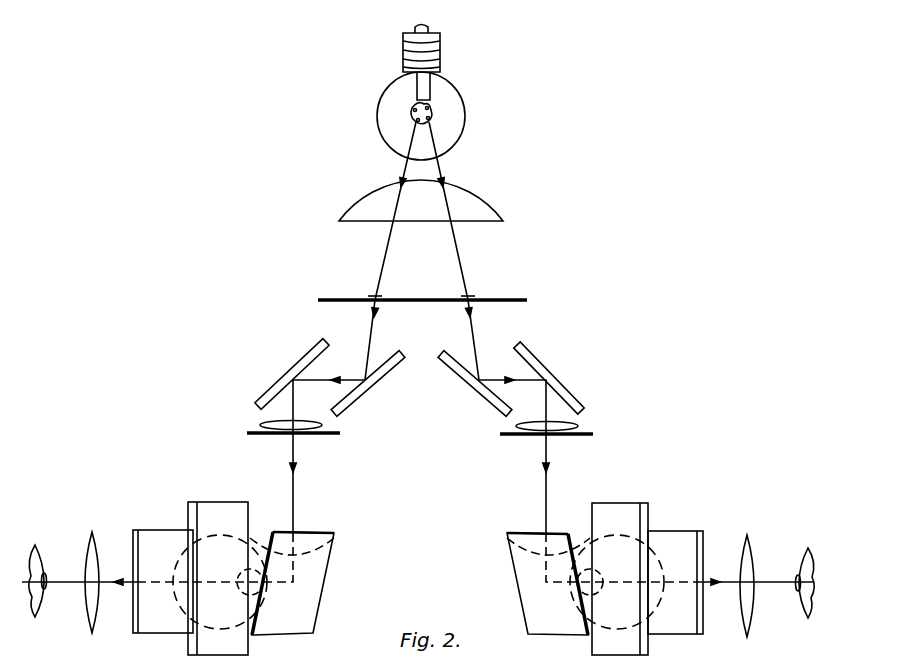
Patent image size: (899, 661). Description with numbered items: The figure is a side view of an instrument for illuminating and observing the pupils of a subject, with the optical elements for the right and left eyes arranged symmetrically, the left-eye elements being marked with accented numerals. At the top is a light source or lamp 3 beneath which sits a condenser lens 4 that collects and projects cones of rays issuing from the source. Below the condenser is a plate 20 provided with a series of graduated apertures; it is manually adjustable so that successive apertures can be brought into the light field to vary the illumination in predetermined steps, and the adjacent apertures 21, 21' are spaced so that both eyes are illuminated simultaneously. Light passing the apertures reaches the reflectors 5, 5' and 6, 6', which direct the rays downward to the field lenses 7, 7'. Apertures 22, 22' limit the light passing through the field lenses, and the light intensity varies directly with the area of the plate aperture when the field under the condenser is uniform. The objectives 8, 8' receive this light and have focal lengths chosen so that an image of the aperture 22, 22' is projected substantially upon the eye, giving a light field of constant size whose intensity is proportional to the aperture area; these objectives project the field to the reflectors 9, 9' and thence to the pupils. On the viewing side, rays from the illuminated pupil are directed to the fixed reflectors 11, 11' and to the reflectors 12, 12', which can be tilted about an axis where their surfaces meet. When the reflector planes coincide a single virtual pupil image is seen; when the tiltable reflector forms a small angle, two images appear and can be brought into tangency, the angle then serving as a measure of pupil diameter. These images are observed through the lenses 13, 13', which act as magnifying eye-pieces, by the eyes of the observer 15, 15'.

The light source 3 is at (388, 116).
The condenser lens 4 is at (357, 219).
The plate 20 is at (438, 303).
The aperture 21 is at (365, 280).
The aperture 21' is at (489, 279).
The reflector 5 is at (368, 371).
The reflector 5' is at (475, 371).
The reflector 6 is at (304, 368).
The reflector 6' is at (538, 372).
The field lens 7 is at (291, 410).
The field lens 7' is at (547, 411).
The aperture 22 is at (303, 448).
The aperture 22' is at (544, 450).
The objective 8 is at (253, 567).
The objective 8' is at (585, 567).
The reflector 9 is at (308, 583).
The reflector 9' is at (536, 584).
The fixed reflector 11 is at (200, 581).
The fixed reflector 11' is at (639, 581).
The reflector 12 is at (152, 593).
The reflector 12' is at (692, 592).
The lens 13 is at (79, 590).
The lens 13' is at (759, 594).
The eye of the observer 15 is at (51, 569).
The eye of the observer 15' is at (796, 578).